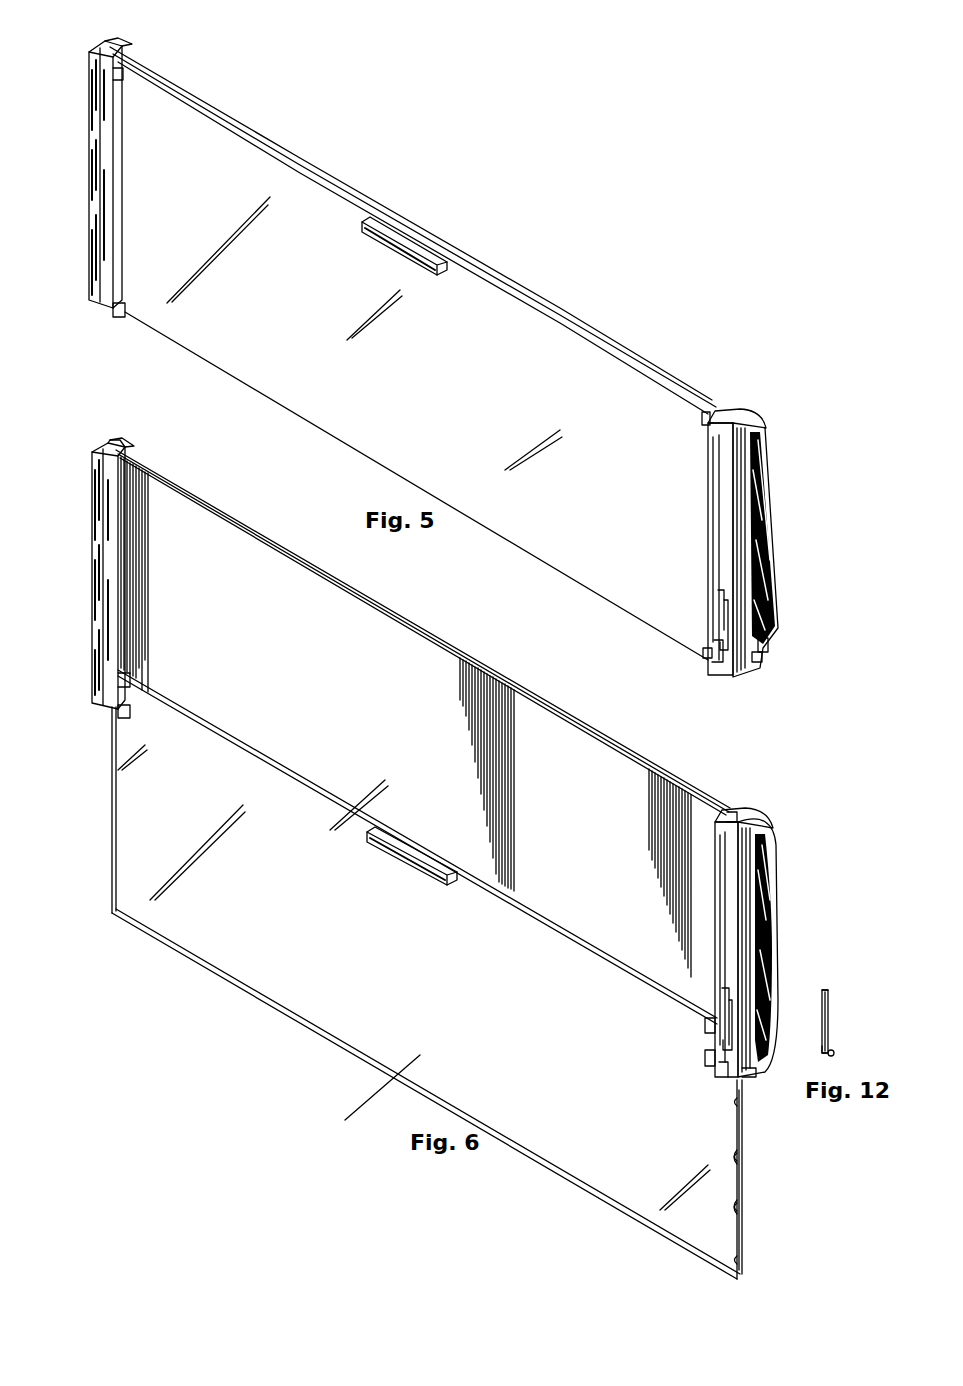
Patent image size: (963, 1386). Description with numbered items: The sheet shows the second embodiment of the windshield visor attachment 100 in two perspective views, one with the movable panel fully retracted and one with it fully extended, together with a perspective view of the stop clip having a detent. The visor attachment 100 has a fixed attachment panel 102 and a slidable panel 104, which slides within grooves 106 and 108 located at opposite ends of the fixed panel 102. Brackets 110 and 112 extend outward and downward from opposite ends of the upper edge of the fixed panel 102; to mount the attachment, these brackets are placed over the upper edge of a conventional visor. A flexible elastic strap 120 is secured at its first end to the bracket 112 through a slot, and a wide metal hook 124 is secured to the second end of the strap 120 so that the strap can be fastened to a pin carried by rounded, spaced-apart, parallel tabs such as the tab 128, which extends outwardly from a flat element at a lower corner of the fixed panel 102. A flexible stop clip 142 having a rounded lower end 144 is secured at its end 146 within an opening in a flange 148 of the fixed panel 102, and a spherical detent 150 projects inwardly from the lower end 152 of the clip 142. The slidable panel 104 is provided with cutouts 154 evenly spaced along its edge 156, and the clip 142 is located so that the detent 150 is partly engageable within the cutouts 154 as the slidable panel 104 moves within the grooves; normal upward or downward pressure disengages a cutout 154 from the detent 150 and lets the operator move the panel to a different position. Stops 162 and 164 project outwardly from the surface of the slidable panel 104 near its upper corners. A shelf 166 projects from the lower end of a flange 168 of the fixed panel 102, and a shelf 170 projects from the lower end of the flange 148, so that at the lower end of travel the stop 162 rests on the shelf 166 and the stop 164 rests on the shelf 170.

In FIG. 5, the visor attachment 100 is at (84, 174).
In FIG. 6, the visor attachment 100 is at (84, 524).
In FIG. 5, the fixed attachment panel 102 is at (292, 150).
In FIG. 6, the fixed attachment panel 102 is at (338, 598).
In FIG. 5, the slidable panel 104 is at (418, 366).
In FIG. 6, the slidable panel 104 is at (232, 979).
In FIG. 6, the groove 106 is at (110, 447).
In FIG. 6, the groove 108 is at (731, 817).
In FIG. 5, the bracket 110 is at (138, 55).
In FIG. 6, the bracket 110 is at (132, 462).
In FIG. 5, the bracket 112 is at (745, 411).
In FIG. 6, the bracket 112 is at (760, 820).
In FIG. 5, the flexible elastic strap 120 is at (767, 552).
In FIG. 6, the flexible elastic strap 120 is at (768, 942).
In FIG. 5, the wide metal hook 124 is at (768, 646).
In FIG. 5, the tab 128 is at (762, 658).
In FIG. 6, the tab 128 is at (748, 1080).
In FIG. 5, the flexible stop clip 142 is at (720, 612).
In FIG. 6, the flexible stop clip 142 is at (722, 1036).
In FIG. 12, the flexible stop clip 142 is at (829, 1011).
In FIG. 5, the rounded lower end 144 is at (718, 660).
In FIG. 6, the rounded lower end 144 is at (728, 1068).
In FIG. 5, the end 146 is at (716, 594).
In FIG. 6, the end 146 is at (722, 992).
In FIG. 12, the end 146 is at (826, 992).
In FIG. 5, the flange 148 is at (718, 477).
In FIG. 6, the flange 148 is at (727, 840).
In FIG. 12, the spherical detent 150 is at (834, 1052).
In FIG. 12, the lower end 152 is at (823, 1056).
In FIG. 6, the cutouts 154 is at (742, 1207).
In FIG. 6, the edge 156 is at (744, 1135).
In FIG. 5, the stop 162 is at (117, 78).
In FIG. 6, the stop 162 is at (124, 686).
In FIG. 5, the stop 164 is at (700, 418).
In FIG. 6, the stop 164 is at (708, 1023).
In FIG. 5, the shelf 166 is at (118, 318).
In FIG. 6, the shelf 166 is at (124, 720).
In FIG. 5, the flange 168 is at (96, 257).
In FIG. 6, the flange 168 is at (100, 605).
In FIG. 5, the shelf 170 is at (705, 650).
In FIG. 6, the shelf 170 is at (712, 1060).